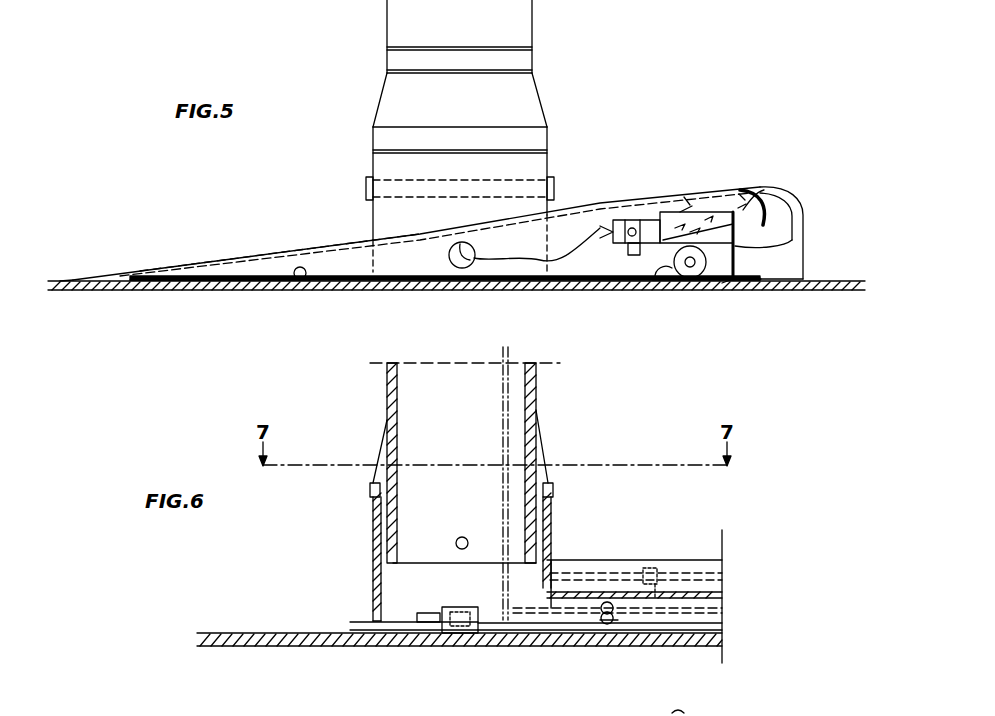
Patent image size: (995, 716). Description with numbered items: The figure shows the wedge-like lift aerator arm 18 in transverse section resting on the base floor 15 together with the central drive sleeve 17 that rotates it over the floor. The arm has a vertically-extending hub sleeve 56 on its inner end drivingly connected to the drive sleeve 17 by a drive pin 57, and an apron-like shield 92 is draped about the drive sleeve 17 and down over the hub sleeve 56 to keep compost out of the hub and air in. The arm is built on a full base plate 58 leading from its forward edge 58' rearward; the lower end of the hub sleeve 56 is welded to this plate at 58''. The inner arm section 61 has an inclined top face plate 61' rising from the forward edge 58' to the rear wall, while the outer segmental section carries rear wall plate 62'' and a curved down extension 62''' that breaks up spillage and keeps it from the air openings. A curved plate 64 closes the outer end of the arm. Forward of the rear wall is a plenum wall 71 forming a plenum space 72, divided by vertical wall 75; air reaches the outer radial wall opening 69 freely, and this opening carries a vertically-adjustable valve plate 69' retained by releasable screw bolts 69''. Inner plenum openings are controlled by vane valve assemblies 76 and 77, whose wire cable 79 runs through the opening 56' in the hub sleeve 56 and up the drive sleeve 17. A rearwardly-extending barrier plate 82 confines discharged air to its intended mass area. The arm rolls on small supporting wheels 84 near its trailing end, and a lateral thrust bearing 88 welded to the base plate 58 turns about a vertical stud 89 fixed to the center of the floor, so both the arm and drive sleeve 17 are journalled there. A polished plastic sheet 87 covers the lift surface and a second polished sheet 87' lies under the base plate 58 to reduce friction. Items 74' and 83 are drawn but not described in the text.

In FIG. 5, the base floor 15 is at (607, 291).
In FIG. 6, the base floor 15 is at (297, 648).
In FIG. 5, the drive sleeve 17 is at (507, 31).
In FIG. 6, the drive sleeve 17 is at (530, 405).
In FIG. 5, the wedge-like lift aerator arm 18 is at (600, 204).
In FIG. 5, the hub sleeve 56 is at (414, 199).
In FIG. 6, the hub sleeve 56 is at (425, 552).
In FIG. 5, the opening in hub sleeve 56' is at (524, 279).
In FIG. 6, the opening in hub sleeve 56' is at (586, 623).
In FIG. 5, the drive pin 57 is at (553, 181).
In FIG. 6, the drive pin 57 is at (468, 541).
In FIG. 6, the base plate 58 is at (633, 610).
In FIG. 5, the forward edge of base plate 58' is at (54, 250).
In FIG. 6, the weld of hub sleeve to base plate 58'' is at (334, 594).
In FIG. 6, the arm section 61 is at (634, 590).
In FIG. 6, the inclined top face plate 61' is at (670, 573).
In FIG. 5, the rear wall plate of segmental section 62'' is at (724, 276).
In FIG. 5, the curved down extension 62''' is at (802, 151).
In FIG. 5, the curved plate 64 is at (300, 281).
In FIG. 5, the outer radial wall opening 69 is at (754, 157).
In FIG. 5, the vertically-adjustable valve plate 69' is at (797, 193).
In FIG. 5, the releasable screw bolts 69'' is at (802, 234).
In FIG. 5, the plenum wall 71 is at (688, 205).
In FIG. 5, the plenum space 72 is at (716, 195).
In FIG. 5, the wheel 74' is at (688, 292).
In FIG. 5, the vertical wall 75 is at (710, 206).
In FIG. 6, the vane valve assembly 76 is at (652, 560).
In FIG. 5, the vane valve assembly 77 is at (650, 215).
In FIG. 6, the wire cable 79 is at (509, 357).
In FIG. 5, the vertical barrier plate 82 is at (783, 222).
In FIG. 6, the fastener 83 is at (693, 709).
In FIG. 5, the supporting wheel 84 is at (722, 284).
In FIG. 5, the polished plastic sheet 87 is at (445, 238).
In FIG. 5, the polished plastic sheet under bottom plate 87' is at (220, 312).
In FIG. 6, the polished plastic sheet under bottom plate 87' is at (374, 612).
In FIG. 6, the lateral thrust bearing 88 is at (427, 617).
In FIG. 6, the vertical stud 89 is at (457, 648).
In FIG. 5, the apron-like shield 92 is at (395, 92).
In FIG. 6, the apron-like shield 92 is at (385, 455).